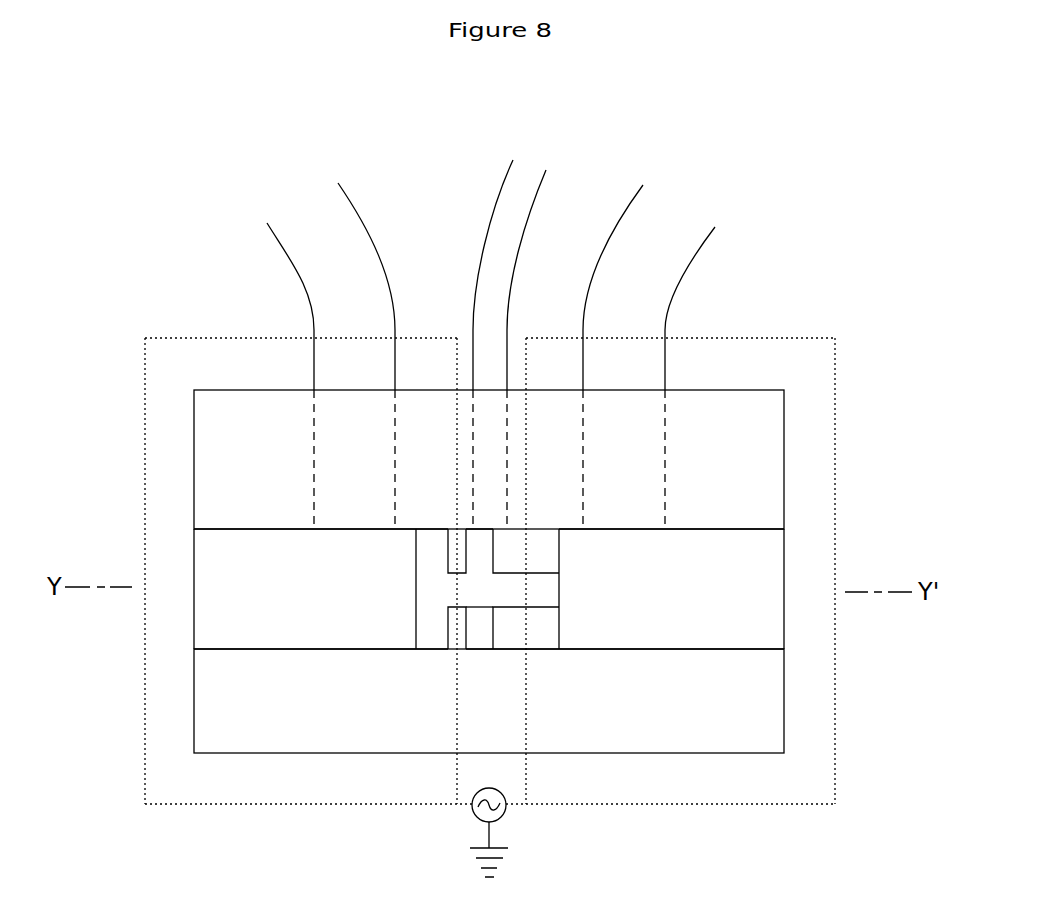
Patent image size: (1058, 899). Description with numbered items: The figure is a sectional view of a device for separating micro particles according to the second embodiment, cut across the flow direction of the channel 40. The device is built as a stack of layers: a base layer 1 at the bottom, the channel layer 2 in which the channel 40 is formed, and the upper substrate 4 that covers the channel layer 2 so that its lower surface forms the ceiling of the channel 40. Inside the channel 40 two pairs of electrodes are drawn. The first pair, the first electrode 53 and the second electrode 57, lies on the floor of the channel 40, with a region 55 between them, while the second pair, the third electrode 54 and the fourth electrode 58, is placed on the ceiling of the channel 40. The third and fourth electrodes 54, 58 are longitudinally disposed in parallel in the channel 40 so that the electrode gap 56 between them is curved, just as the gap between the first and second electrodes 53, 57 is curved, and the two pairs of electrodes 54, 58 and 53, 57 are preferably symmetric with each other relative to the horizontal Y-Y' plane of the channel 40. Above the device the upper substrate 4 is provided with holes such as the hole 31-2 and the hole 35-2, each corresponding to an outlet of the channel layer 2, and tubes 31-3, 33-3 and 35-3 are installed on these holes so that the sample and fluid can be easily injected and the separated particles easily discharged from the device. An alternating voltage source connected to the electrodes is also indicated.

The substrate 1 is at (229, 702).
The channel layer 2 is at (230, 563).
The upper substrate 4 is at (230, 447).
The channel 40 is at (442, 590).
The first electrode 53 is at (447, 625).
The third electrode 54 is at (447, 557).
The electrode 55 is at (478, 627).
The electrode gap 56 is at (477, 560).
The second electrode 57 is at (537, 625).
The fourth electrode 58 is at (530, 555).
The hole 31-2 is at (335, 447).
The tube 31-3 is at (315, 223).
The tube 33-3 is at (671, 215).
The hole 35-2 is at (485, 444).
The tube 35-3 is at (524, 182).